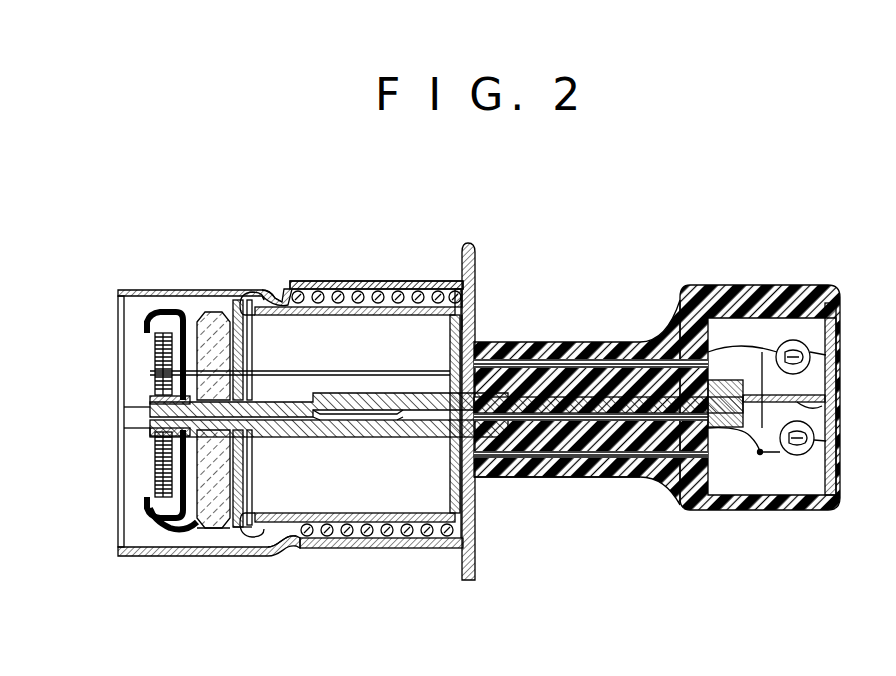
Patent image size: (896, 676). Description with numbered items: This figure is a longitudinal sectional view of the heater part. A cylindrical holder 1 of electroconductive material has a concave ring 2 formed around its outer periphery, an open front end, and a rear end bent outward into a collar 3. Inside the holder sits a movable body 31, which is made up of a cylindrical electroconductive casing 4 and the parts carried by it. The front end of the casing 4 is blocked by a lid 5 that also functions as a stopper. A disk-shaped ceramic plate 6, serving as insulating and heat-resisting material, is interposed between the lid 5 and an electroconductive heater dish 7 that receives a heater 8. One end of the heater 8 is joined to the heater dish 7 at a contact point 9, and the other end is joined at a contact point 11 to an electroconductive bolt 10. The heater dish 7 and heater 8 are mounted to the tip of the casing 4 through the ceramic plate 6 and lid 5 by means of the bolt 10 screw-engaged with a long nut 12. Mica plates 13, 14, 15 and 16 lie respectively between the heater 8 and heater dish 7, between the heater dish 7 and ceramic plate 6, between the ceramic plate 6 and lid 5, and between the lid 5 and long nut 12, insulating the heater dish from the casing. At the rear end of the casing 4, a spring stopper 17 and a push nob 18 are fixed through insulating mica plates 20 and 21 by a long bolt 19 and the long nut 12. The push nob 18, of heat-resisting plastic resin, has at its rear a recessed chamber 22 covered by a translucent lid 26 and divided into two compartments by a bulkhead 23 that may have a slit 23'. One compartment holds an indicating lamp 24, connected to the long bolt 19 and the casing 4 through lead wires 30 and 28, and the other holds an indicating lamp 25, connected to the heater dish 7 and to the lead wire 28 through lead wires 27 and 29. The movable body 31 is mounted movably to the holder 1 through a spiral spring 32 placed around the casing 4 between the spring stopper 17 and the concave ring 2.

The holder 1 is at (326, 282).
The concave ring 2 is at (276, 292).
The collar 3 is at (467, 243).
The casing 4 is at (385, 298).
The lid 5 is at (247, 300).
The ceramic plate 6 is at (211, 312).
The heater dish 7 is at (162, 297).
The heater 8 is at (160, 490).
The contact point 9 is at (158, 330).
The electroconductive bolt 10 is at (157, 428).
The contact point 11 is at (157, 402).
The long nut 12 is at (330, 437).
The mica plate 13 is at (180, 533).
The mica plate 14 is at (200, 530).
The mica plate 15 is at (233, 529).
The mica plate 16 is at (263, 548).
The spring stopper 17 is at (478, 302).
The push nob 18 is at (660, 328).
The long bolt 19 is at (548, 414).
The mica plate 20 is at (477, 322).
The mica plate 21 is at (447, 333).
The recessed chamber 22 is at (763, 333).
The bulkhead 23 is at (797, 398).
The slit 23' is at (845, 414).
The indicating lamp 24 is at (826, 441).
The indicating lamp 25 is at (826, 355).
The translucent lid 26 is at (837, 468).
The lead wire 27 is at (588, 362).
The lead wire 28 is at (600, 433).
The lead wire 29 is at (758, 458).
The lead wire 30 is at (755, 446).
The movable body 31 is at (515, 483).
The spring 32 is at (375, 548).